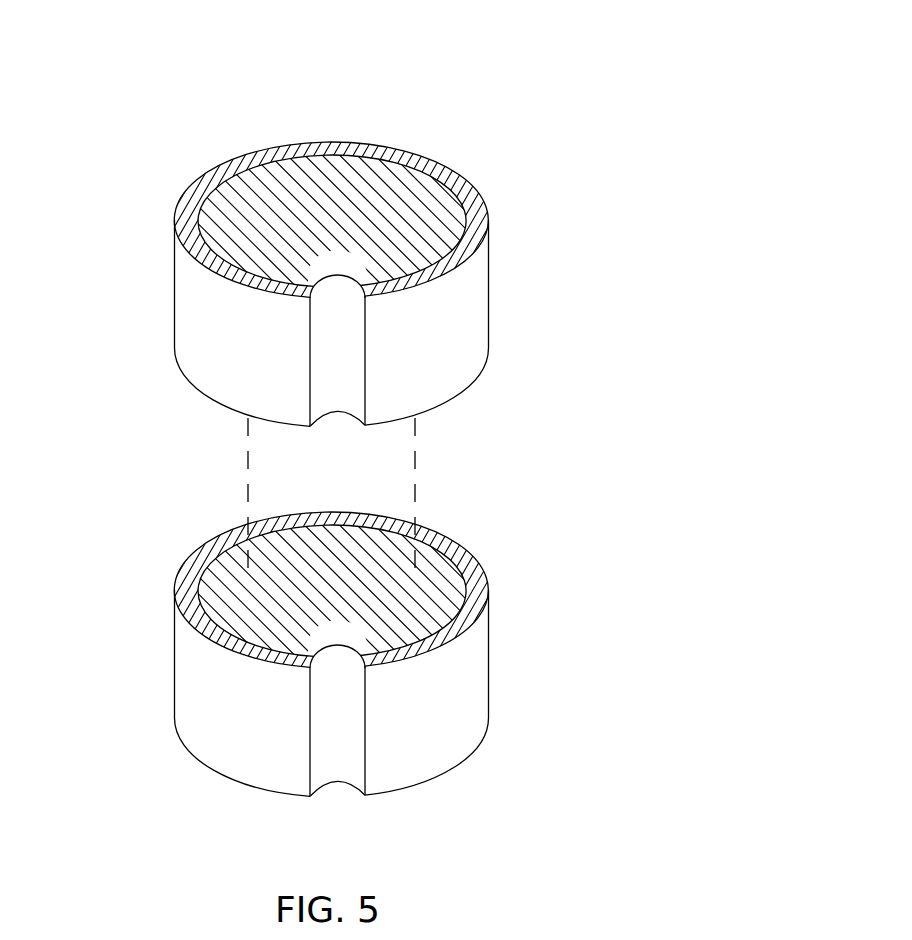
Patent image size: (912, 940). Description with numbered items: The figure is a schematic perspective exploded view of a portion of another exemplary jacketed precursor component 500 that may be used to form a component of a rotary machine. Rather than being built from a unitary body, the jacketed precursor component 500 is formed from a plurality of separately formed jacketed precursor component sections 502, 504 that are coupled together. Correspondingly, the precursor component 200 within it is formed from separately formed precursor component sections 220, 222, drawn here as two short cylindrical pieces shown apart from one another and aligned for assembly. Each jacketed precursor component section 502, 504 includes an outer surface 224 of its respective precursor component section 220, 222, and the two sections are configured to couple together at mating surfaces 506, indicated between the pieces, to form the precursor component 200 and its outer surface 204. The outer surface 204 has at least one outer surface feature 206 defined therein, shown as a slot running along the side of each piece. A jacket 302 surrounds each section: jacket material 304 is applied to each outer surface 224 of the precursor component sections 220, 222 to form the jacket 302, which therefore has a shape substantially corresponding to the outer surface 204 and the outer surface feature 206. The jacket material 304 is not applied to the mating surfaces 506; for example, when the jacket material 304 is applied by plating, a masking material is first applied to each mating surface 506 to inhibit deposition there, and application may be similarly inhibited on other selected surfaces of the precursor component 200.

The jacketed precursor component 500 is at (463, 78).
The jacketed precursor component section 502 is at (153, 285).
The jacketed precursor component section 504 is at (153, 653).
The mating surfaces 506 is at (190, 395).
The precursor component 200 is at (344, 220).
The precursor component section 220 is at (418, 202).
The precursor component section 222 is at (418, 572).
The outer surface 204 is at (358, 405).
The outer surface 224 is at (448, 240).
The outer surface feature 206 is at (360, 270).
The jacket 302 is at (250, 372).
The jacket material 304 is at (237, 163).